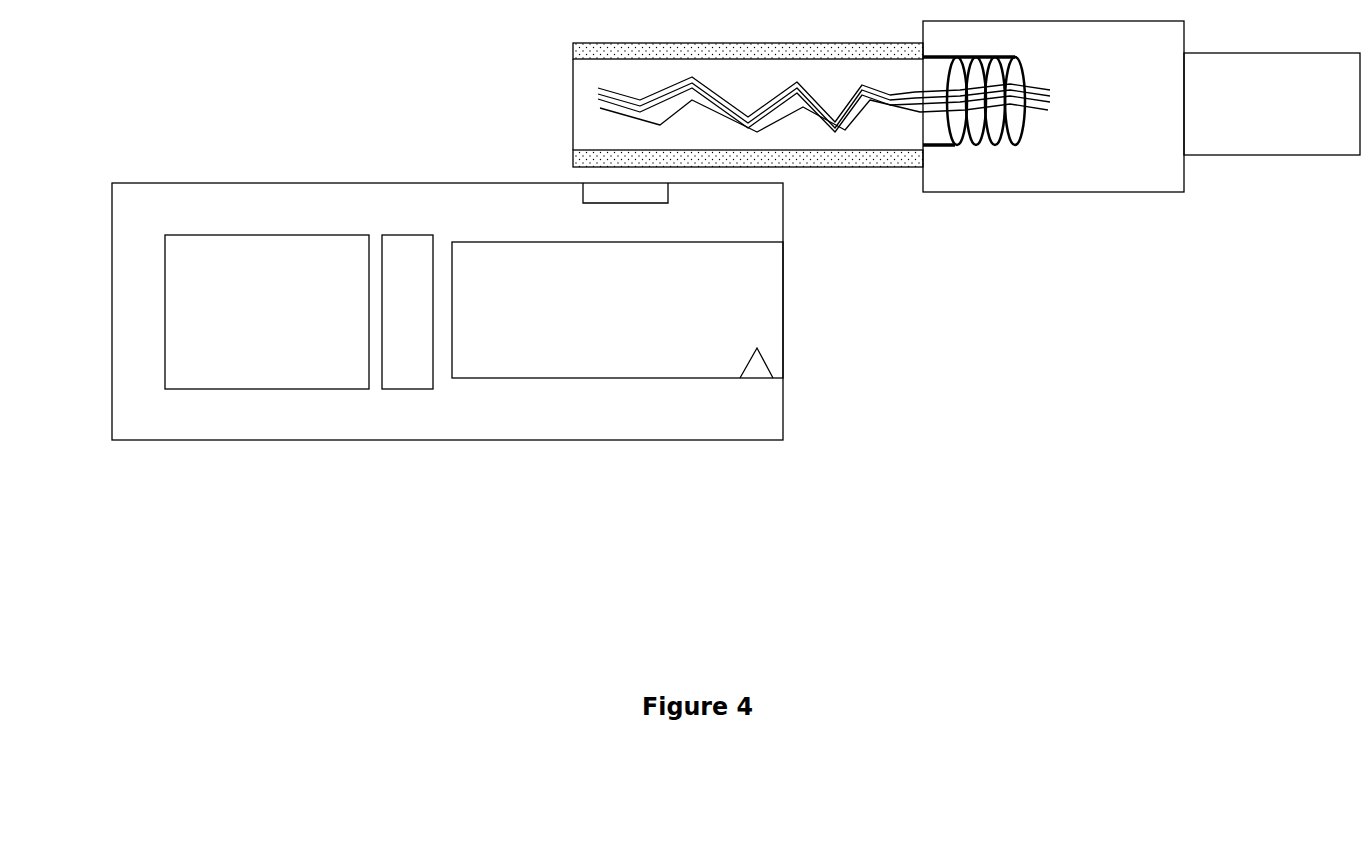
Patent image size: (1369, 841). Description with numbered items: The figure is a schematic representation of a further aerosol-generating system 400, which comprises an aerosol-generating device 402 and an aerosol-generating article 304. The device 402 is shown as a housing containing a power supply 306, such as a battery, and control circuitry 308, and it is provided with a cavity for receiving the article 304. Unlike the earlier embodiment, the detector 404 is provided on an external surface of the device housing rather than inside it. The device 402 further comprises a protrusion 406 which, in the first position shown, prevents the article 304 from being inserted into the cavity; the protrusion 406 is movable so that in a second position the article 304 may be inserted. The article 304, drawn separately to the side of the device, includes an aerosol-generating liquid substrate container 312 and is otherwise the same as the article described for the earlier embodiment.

The aerosol-generating article 304 is at (1082, 176).
The power supply 306 is at (233, 255).
The control circuitry 308 is at (407, 258).
The aerosol-generating liquid substrate container 312 is at (515, 262).
The aerosol-generating system 400 is at (568, 470).
The aerosol-generating device 402 is at (415, 420).
The detector 404 is at (585, 197).
The protrusion 406 is at (757, 370).